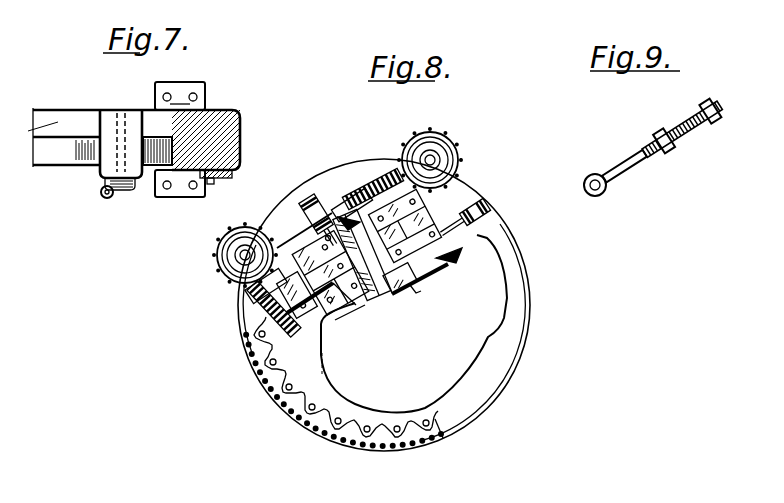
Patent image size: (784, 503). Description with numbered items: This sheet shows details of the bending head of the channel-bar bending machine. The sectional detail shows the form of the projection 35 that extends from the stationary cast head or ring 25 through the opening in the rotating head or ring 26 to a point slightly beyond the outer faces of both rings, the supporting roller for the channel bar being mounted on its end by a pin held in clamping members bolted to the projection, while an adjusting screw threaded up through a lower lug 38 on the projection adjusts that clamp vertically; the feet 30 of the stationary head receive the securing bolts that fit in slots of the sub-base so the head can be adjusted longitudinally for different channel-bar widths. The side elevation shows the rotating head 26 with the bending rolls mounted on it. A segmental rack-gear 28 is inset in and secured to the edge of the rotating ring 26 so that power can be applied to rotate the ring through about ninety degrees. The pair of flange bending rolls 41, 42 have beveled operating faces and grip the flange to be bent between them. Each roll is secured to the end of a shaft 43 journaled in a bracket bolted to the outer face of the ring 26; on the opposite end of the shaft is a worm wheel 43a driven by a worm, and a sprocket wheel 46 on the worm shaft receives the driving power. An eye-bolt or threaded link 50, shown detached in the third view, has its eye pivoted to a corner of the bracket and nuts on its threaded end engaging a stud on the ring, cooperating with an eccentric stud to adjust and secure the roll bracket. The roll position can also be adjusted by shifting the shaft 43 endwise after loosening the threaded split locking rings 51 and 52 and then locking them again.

In FIG. 7, the stationary cast head or ring 25 is at (243, 120).
In FIG. 7, the feet 30 is at (186, 197).
In FIG. 7, the projection 35 is at (105, 152).
In FIG. 7, the lower lug 38 is at (114, 198).
In FIG. 8, the rotatable head or ring 26 is at (528, 327).
In FIG. 8, the segmental rack-gear 28 is at (280, 377).
In FIG. 8, the flange bending roll 41 is at (395, 284).
In FIG. 8, the flange bending roll 42 is at (417, 277).
In FIG. 8, the shaft 43 is at (333, 313).
In FIG. 8, the worm wheel 43a is at (263, 310).
In FIG. 8, the sprocket wheel 46 is at (225, 279).
In FIG. 8, the eye-bolt or threaded link 50 is at (325, 232).
In FIG. 9, the eye-bolt or threaded link 50 is at (633, 166).
In FIG. 8, the threaded split locking ring 51 is at (333, 340).
In FIG. 8, the threaded split locking ring 52 is at (246, 325).